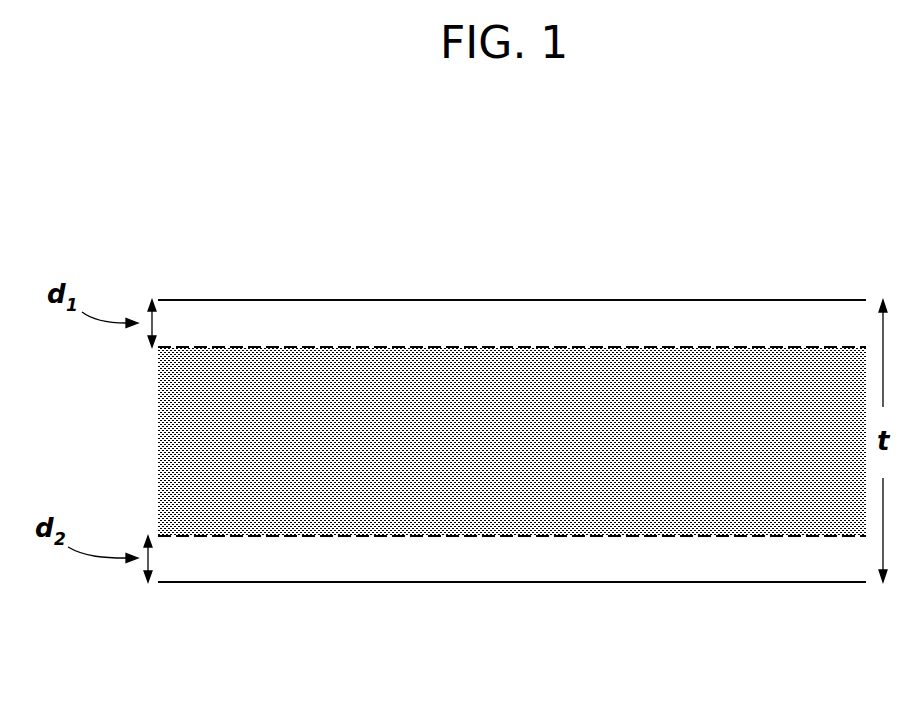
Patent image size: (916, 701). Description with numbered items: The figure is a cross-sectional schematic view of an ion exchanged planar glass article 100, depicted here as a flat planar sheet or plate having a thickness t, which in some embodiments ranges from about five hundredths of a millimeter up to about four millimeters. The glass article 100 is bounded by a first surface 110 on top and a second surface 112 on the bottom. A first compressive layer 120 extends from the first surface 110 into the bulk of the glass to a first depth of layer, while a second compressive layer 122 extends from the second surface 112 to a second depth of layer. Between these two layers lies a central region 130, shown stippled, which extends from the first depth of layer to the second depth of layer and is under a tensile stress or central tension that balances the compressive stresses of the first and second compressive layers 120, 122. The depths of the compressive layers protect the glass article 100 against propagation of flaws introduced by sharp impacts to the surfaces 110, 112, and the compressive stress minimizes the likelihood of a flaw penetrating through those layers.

The glass article 100 is at (522, 176).
The first surface 110 is at (631, 290).
The second surface 112 is at (619, 594).
The first compressive layer 120 is at (288, 311).
The second compressive layer 122 is at (302, 572).
The central region 130 is at (172, 440).